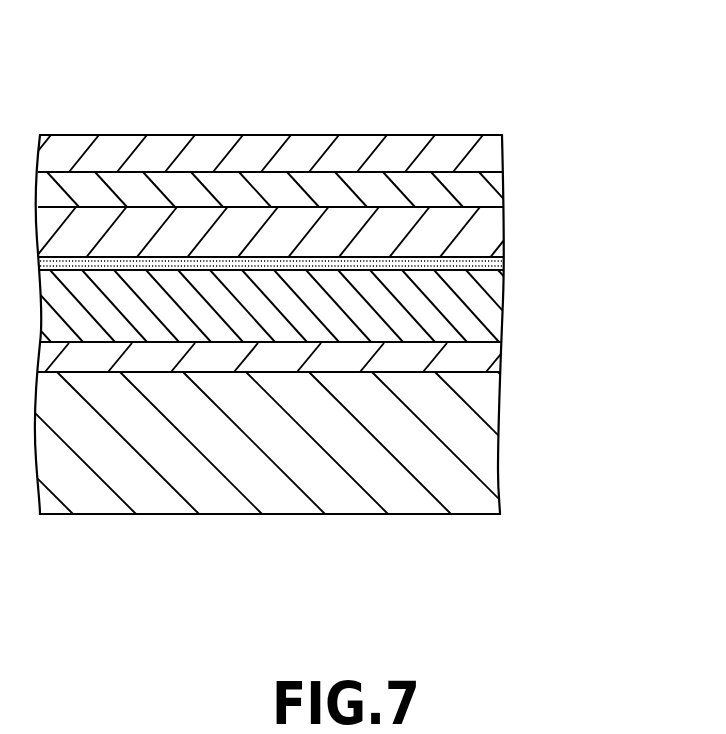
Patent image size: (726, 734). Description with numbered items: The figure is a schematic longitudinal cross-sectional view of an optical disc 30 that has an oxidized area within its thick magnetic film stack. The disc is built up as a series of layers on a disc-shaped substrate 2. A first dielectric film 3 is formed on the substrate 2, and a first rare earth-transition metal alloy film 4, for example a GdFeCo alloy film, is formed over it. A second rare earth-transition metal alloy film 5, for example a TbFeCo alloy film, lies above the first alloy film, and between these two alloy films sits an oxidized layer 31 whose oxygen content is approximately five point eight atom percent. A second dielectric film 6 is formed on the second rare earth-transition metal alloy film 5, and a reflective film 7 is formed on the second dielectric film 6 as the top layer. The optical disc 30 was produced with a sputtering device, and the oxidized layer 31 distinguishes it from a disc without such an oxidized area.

The optical disc 30 is at (510, 99).
The reflective film 7 is at (485, 157).
The second dielectric film 6 is at (480, 190).
The second rare earth-transition metal alloy film 5 is at (487, 235).
The oxidized layer 31 is at (487, 265).
The first rare earth-transition metal alloy film 4 is at (485, 310).
The first dielectric film 3 is at (478, 360).
The substrate 2 is at (477, 453).